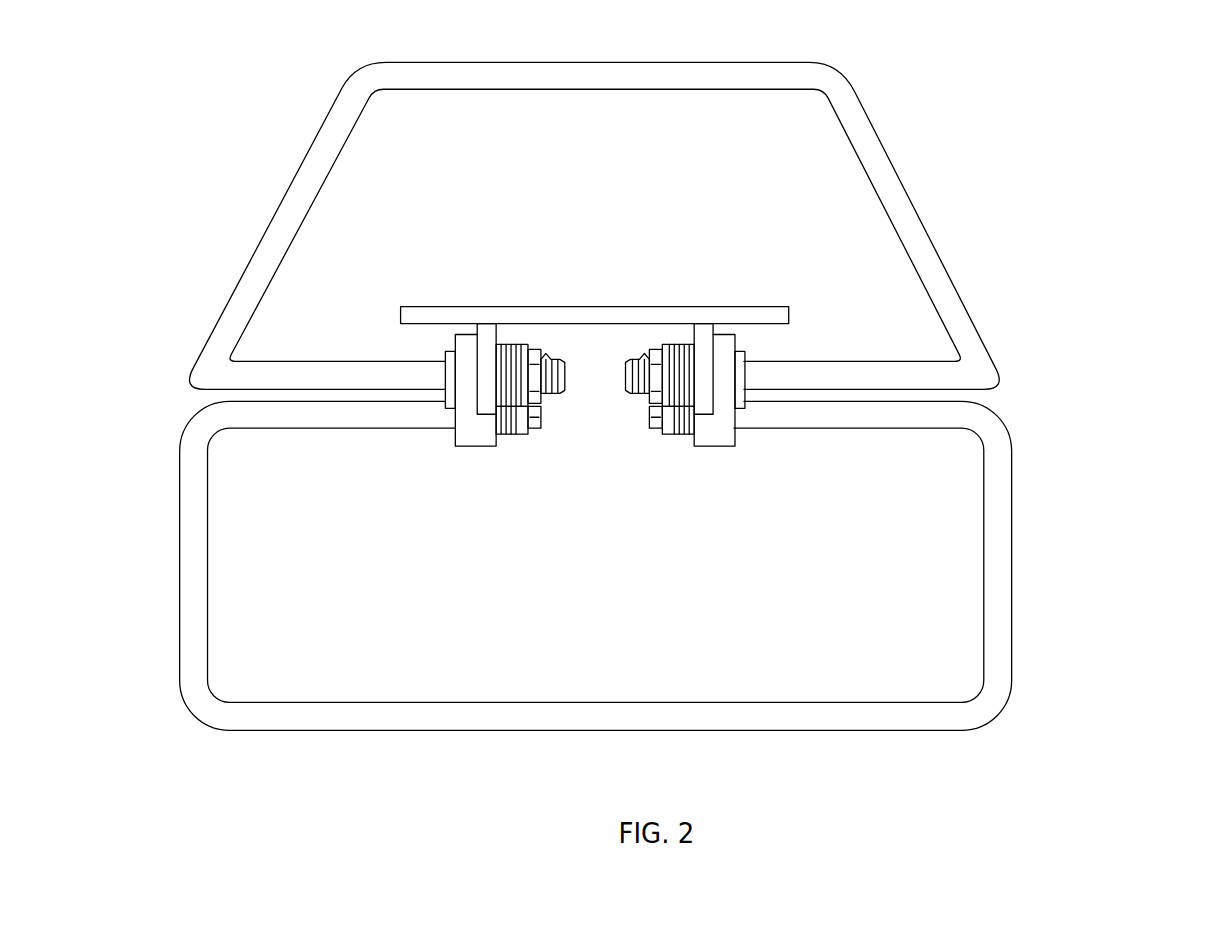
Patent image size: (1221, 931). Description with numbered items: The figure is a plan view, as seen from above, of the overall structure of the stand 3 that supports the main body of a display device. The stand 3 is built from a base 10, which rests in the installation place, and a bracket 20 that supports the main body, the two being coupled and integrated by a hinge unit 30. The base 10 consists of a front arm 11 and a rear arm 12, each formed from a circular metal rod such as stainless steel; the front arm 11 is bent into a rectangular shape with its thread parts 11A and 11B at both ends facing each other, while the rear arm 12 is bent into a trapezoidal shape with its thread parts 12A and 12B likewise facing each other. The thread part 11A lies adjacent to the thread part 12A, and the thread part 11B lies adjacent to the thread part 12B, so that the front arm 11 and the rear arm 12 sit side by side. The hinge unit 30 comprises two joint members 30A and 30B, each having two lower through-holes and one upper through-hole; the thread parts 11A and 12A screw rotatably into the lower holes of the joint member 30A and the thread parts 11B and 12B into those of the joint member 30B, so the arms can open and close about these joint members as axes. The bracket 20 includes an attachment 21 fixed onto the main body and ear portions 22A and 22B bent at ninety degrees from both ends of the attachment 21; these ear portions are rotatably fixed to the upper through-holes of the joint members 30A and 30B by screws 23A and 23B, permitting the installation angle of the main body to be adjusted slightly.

The stand 3 is at (1023, 104).
The base 10 is at (1153, 280).
The front arm 11 is at (1003, 508).
The rear arm 12 is at (947, 288).
The thread part 11A is at (545, 423).
The thread part 11B is at (640, 423).
The thread part 12A is at (538, 360).
The thread part 12B is at (647, 360).
The bracket 20 is at (458, 240).
The attachment 21 is at (590, 306).
The ear portion 22A is at (480, 350).
The ear portion 22B is at (704, 350).
The screw 23A is at (452, 377).
The screw 23B is at (733, 377).
The hinge unit 30 is at (448, 558).
The joint member 30A is at (474, 440).
The joint member 30B is at (712, 440).